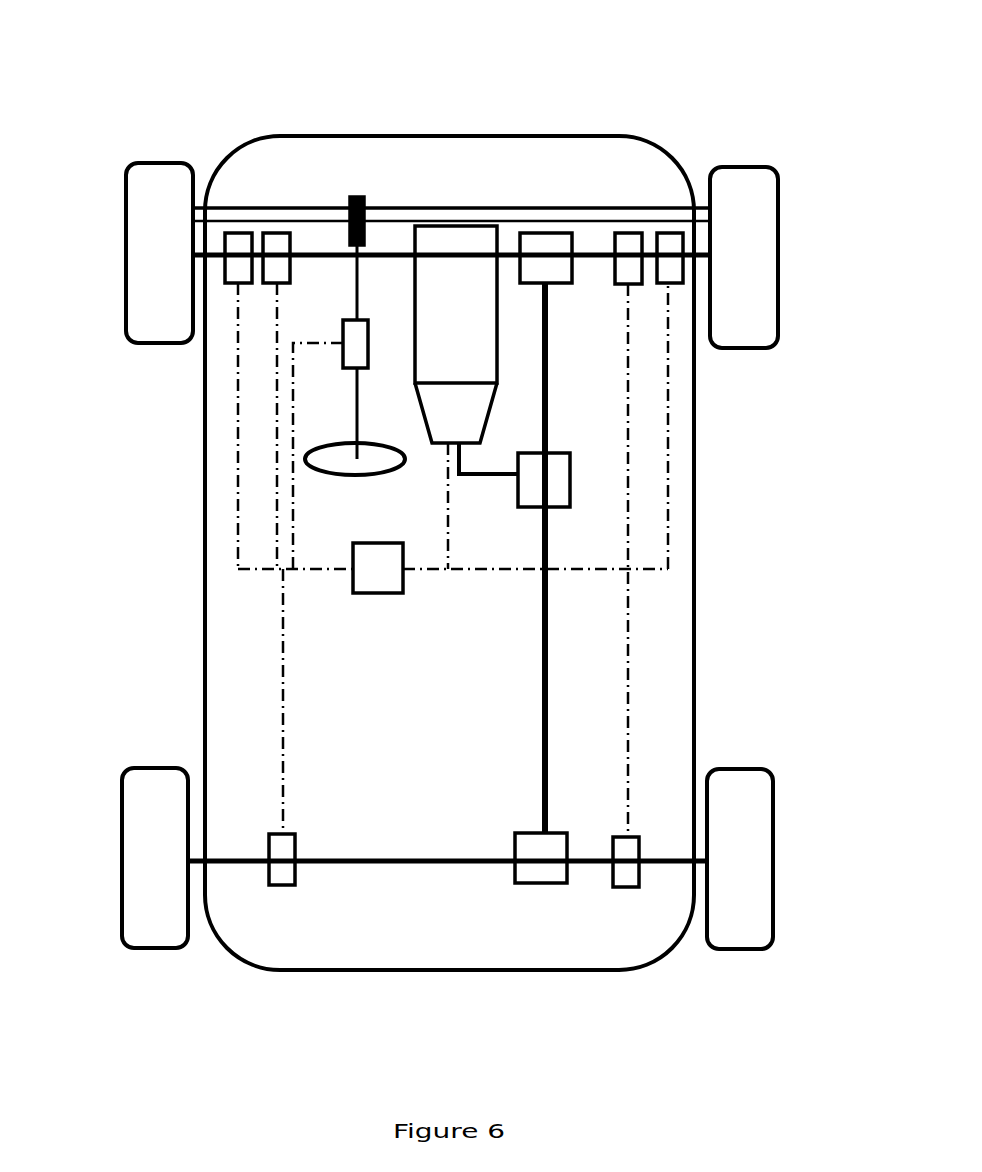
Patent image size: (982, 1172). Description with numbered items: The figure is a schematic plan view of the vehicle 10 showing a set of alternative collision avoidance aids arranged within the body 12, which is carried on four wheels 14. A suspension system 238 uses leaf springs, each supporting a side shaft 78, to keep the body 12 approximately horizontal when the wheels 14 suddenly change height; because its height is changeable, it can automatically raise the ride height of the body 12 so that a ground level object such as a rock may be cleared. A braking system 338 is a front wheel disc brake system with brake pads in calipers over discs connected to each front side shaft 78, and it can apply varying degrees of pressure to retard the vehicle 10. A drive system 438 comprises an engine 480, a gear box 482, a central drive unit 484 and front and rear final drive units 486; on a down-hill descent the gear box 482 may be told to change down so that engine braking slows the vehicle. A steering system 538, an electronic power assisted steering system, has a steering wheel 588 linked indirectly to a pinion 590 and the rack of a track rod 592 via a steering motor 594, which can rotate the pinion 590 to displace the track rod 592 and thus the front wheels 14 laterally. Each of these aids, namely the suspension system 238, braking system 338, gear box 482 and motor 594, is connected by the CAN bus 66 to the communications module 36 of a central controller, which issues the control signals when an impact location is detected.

The vehicle 10 is at (530, 113).
The body 12 is at (694, 533).
The wheels 14 is at (135, 257).
The communications module 36 is at (378, 593).
The CAN bus 66 is at (272, 522).
The side shaft 78 is at (315, 253).
The suspension system 238 is at (277, 232).
The braking system 338 is at (238, 232).
The drive system 438 is at (395, 364).
The engine 480 is at (448, 290).
The gear box 482 is at (438, 410).
The central drive unit 484 is at (570, 468).
The final drive units 486 is at (545, 232).
The steering system 538 is at (316, 334).
The steering wheel 588 is at (327, 477).
The pinion 590 is at (357, 196).
The track rod 592 is at (390, 207).
The steering motor 594 is at (343, 352).